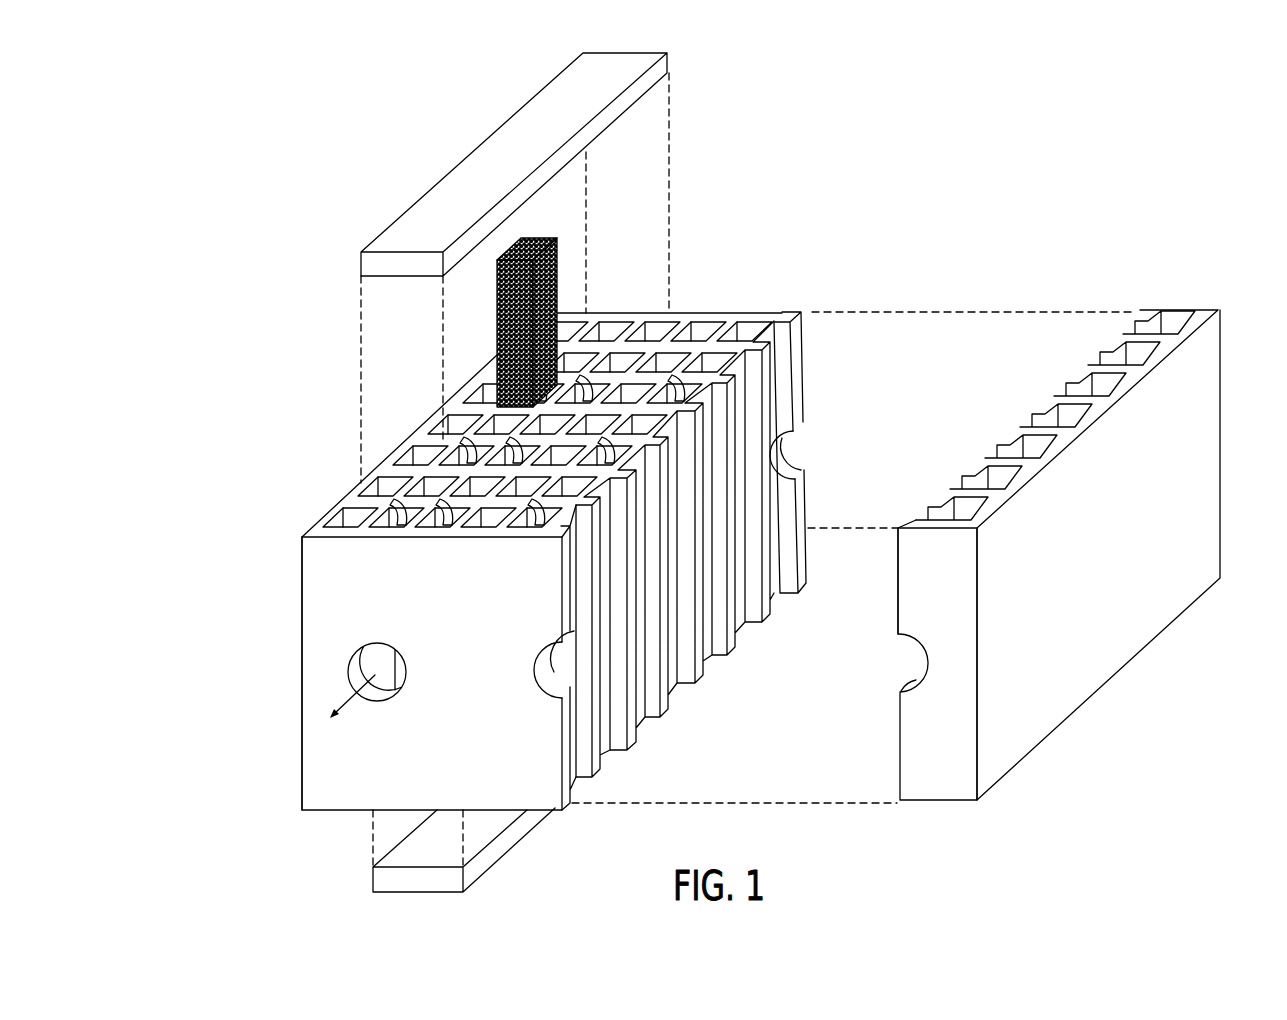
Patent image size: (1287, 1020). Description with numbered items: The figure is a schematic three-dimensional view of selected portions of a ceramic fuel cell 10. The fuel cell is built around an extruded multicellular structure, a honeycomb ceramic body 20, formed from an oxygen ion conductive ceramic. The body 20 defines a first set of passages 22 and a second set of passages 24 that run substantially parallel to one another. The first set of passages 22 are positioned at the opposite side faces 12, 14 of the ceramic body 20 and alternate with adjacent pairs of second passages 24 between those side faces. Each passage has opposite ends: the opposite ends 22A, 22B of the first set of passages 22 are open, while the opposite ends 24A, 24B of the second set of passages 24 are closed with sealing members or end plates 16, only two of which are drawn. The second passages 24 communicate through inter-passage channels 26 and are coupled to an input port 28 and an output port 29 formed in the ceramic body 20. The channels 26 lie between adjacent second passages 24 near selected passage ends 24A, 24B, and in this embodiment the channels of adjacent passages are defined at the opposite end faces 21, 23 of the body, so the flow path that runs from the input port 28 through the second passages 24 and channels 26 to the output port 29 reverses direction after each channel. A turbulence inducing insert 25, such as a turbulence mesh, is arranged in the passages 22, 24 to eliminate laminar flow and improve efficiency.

The ceramic fuel cell 10 is at (1043, 228).
The side face 12 is at (520, 564).
The side face 14 is at (1087, 517).
The end plate 16 is at (361, 253).
The honeycomb ceramic body 20 is at (1222, 300).
The end face 21 is at (336, 472).
The first set of passages 22 is at (322, 548).
The end of first passage 22A is at (1165, 328).
The end of first passage 22B is at (1205, 617).
The end face 23 is at (338, 826).
The second set of passages 24 is at (651, 312).
The end of second passage 24A is at (782, 322).
The end of second passage 24B is at (786, 598).
The turbulence inducing insert 25 is at (538, 245).
The inter-passage channel 26 is at (476, 436).
The input port 28 is at (845, 415).
The output port 29 is at (557, 668).